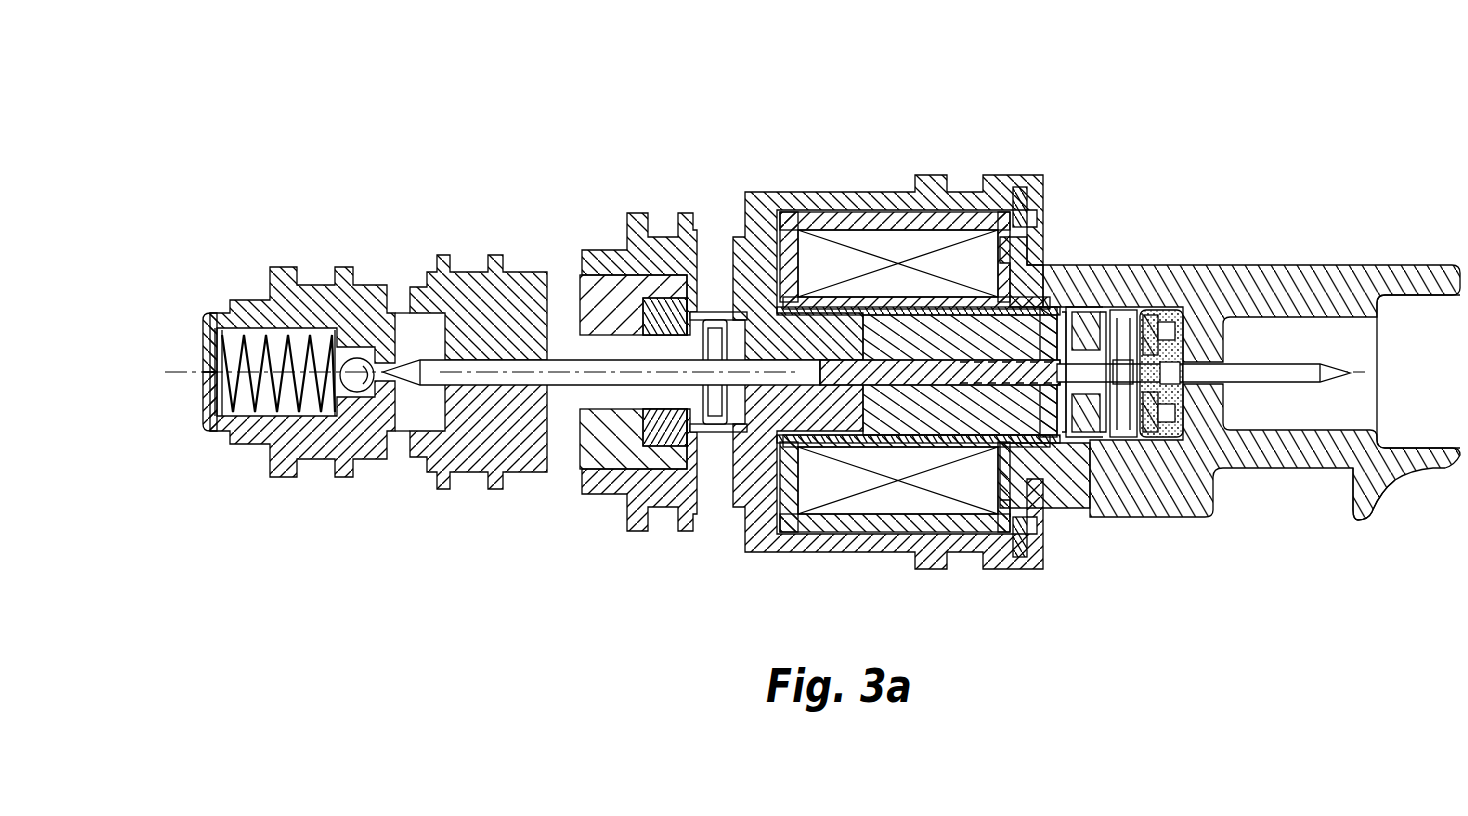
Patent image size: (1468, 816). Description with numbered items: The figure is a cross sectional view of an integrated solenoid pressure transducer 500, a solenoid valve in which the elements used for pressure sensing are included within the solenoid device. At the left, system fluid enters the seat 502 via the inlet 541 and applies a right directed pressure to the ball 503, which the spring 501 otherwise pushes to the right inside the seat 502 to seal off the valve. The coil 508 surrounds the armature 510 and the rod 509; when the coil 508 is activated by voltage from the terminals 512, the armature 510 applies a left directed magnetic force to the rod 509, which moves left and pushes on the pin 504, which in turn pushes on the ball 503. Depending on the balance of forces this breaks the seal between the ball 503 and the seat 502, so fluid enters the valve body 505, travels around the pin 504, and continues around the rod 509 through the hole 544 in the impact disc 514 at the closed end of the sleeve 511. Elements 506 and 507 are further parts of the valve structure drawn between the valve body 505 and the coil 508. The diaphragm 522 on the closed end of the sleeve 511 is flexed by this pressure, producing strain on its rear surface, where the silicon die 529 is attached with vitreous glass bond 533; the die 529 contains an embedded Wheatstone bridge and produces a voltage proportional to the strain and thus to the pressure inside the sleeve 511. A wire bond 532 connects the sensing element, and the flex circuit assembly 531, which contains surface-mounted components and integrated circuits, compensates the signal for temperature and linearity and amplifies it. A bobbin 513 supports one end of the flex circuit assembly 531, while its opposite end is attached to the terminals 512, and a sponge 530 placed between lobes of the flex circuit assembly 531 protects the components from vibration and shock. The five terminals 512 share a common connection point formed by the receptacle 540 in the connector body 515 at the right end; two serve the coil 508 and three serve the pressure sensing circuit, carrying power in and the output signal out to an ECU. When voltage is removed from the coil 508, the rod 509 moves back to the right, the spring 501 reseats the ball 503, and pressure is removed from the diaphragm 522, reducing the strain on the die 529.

The integrated solenoid pressure transducer 500 is at (1000, 120).
The spring 501 is at (265, 350).
The seat 502 is at (272, 440).
The ball 503 is at (360, 345).
The pin 504 is at (522, 368).
The valve body 505 is at (460, 320).
The retaining nut 506 is at (660, 240).
The seal 507 is at (618, 487).
The coil 508 is at (880, 493).
The rod 509 is at (770, 383).
The armature 510 is at (920, 328).
The sleeve 511 is at (1085, 320).
The terminals 512 is at (1290, 365).
The bobbin 513 is at (1008, 500).
The impact disc 514 is at (1077, 443).
The connector body 515 is at (1315, 470).
The diaphragm 522 is at (1063, 305).
The silicon die 529 is at (1130, 450).
The sponge 530 is at (1163, 312).
The flex circuit assembly 531 is at (1180, 450).
The wire bond 532 is at (1140, 320).
The glass bond 533 is at (1113, 440).
The receptacle 540 is at (1418, 300).
The inlet 541 is at (207, 336).
The hole 544 is at (1105, 325).